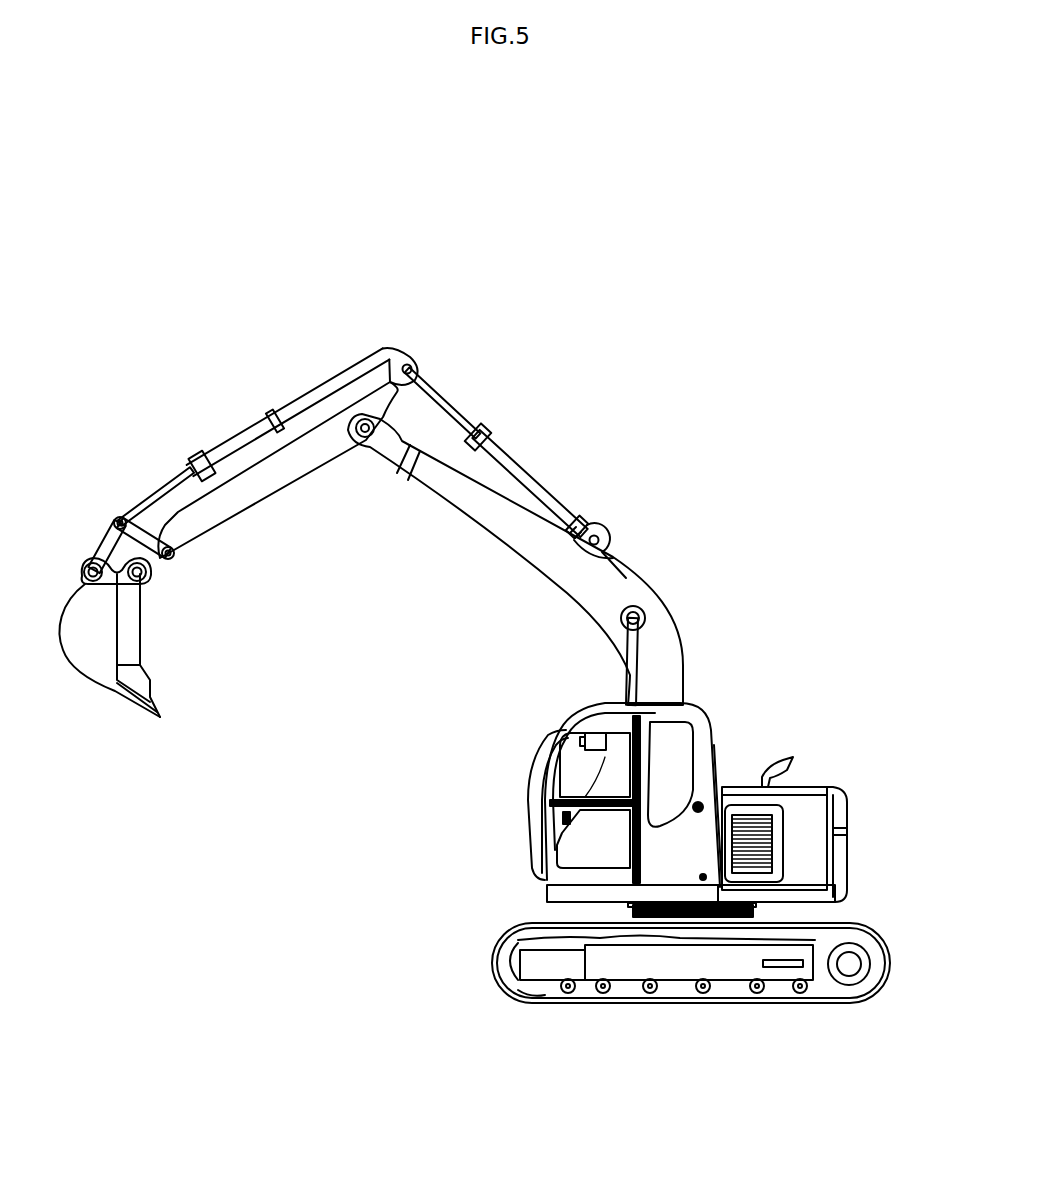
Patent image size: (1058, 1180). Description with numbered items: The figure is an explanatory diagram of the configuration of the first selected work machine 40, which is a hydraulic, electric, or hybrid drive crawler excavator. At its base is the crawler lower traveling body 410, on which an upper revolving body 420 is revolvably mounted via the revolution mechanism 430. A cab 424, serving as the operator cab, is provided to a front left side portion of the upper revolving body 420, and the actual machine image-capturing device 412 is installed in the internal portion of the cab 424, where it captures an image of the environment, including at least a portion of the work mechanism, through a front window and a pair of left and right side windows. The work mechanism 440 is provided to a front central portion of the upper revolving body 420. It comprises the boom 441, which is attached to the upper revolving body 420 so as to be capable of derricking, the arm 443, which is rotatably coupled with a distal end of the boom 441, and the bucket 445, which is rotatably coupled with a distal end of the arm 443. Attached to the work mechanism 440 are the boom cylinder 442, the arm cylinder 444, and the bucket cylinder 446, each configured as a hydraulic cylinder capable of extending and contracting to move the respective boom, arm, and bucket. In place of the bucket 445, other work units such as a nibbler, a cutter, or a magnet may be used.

The first selected work machine 40 is at (725, 316).
The work mechanism 440 is at (514, 382).
The boom 441 is at (667, 640).
The boom cylinder 442 is at (623, 687).
The arm 443 is at (263, 493).
The arm cylinder 444 is at (524, 472).
The bucket 445 is at (93, 667).
The bucket cylinder 446 is at (253, 428).
The cab 424 is at (725, 690).
The actual machine image-capturing device 412 is at (596, 731).
The upper revolving body 420 is at (872, 814).
The revolution mechanism 430 is at (778, 912).
The crawler lower traveling body 410 is at (517, 930).